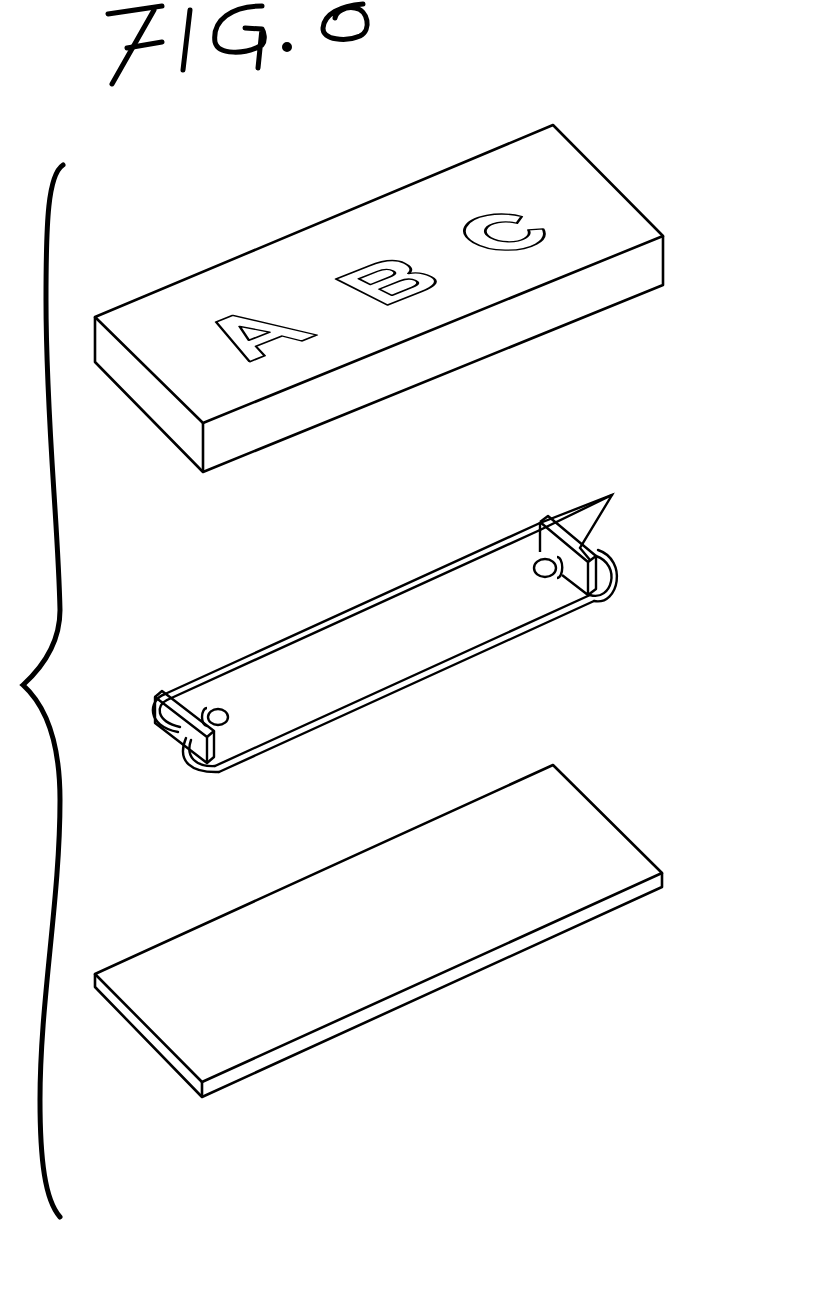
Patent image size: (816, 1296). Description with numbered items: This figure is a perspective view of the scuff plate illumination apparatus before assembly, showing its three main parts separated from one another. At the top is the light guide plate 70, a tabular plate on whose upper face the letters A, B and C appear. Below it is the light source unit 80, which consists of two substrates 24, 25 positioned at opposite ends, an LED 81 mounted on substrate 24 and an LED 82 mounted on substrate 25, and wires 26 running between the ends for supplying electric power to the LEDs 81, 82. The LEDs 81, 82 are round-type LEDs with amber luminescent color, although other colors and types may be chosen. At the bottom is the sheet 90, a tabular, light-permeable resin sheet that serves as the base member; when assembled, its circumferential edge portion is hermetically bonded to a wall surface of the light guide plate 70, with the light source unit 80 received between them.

The light guide plate 70 is at (632, 183).
The light source unit 80 is at (414, 620).
The wires 26 is at (366, 603).
The substrate 24 is at (153, 700).
The substrate 25 is at (592, 552).
The LED 81 is at (228, 712).
The LED 82 is at (532, 574).
The sheet 90 is at (623, 783).